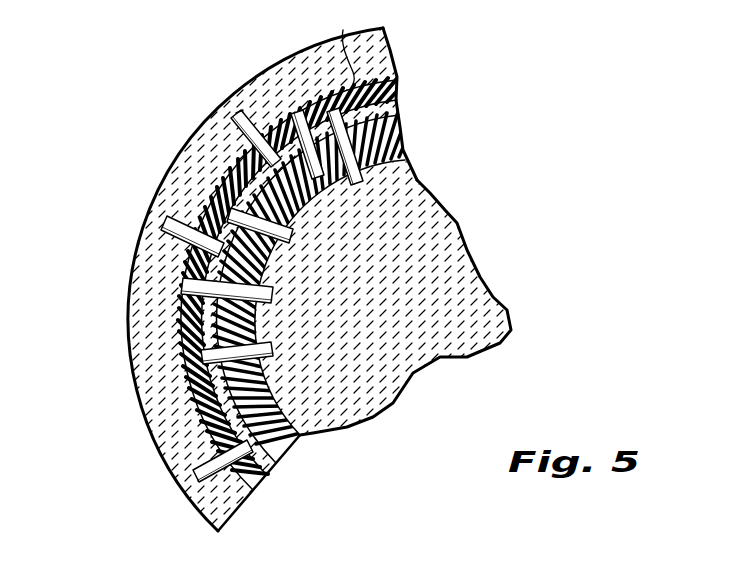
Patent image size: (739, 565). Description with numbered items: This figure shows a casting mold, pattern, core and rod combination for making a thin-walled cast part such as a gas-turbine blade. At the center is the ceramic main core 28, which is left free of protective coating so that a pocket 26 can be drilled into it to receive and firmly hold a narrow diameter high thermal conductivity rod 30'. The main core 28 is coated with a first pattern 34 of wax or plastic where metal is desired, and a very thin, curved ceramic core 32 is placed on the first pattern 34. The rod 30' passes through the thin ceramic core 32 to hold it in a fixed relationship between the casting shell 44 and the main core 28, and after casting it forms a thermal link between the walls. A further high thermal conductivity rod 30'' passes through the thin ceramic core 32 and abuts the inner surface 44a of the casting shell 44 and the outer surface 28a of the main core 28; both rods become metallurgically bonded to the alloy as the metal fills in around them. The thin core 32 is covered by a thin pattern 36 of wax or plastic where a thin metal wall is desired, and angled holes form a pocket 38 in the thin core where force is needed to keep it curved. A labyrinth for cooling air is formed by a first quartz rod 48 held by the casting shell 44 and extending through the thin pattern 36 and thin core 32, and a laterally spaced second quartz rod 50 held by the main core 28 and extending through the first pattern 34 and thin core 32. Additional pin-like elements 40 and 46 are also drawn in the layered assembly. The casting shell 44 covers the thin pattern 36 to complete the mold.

The pocket 26 is at (250, 347).
The main core 28 is at (407, 357).
The outer surface of the main core 28a is at (428, 190).
The high thermal conductivity rod 30' is at (239, 266).
The high thermal conductivity rod 30'' is at (298, 94).
The thin ceramic core 32 is at (388, 110).
The first pattern 34 is at (240, 390).
The thin pattern 36 is at (188, 333).
The pocket 38 is at (240, 110).
The fastener 40 is at (233, 122).
The casting shell 44 is at (147, 257).
The inner surface of the casting shell 44a is at (343, 30).
The interface layer 46 is at (180, 277).
The first rod 48 is at (165, 216).
The second rod 50 is at (287, 240).